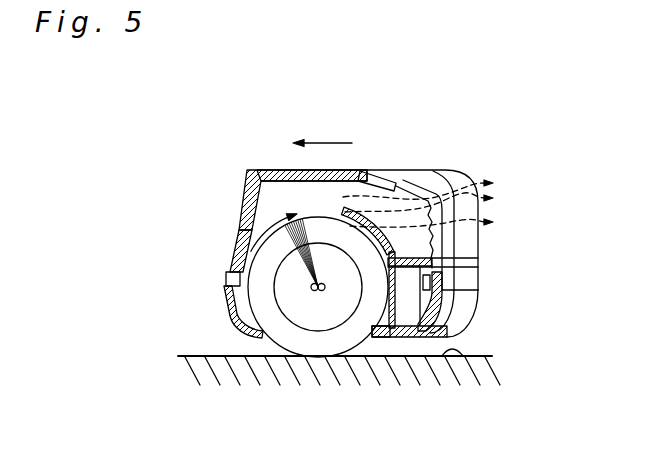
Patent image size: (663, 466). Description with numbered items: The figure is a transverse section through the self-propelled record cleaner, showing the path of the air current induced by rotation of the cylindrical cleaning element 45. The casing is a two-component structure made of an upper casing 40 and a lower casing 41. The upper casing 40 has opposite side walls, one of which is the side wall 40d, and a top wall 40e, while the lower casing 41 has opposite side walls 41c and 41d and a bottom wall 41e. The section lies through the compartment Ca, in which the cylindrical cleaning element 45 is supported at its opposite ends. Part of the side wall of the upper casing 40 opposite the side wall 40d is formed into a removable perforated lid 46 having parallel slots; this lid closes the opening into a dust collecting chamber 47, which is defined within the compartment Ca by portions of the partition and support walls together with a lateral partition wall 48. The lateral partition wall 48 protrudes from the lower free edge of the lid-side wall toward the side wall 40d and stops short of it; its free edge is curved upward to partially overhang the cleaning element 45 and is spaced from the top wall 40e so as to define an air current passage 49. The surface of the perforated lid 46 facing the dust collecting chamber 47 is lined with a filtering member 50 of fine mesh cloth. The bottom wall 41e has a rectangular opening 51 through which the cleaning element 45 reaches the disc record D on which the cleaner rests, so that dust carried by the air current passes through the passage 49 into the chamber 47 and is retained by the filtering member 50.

The upper casing 40 is at (232, 204).
The side wall 40d is at (229, 243).
The top wall 40e is at (291, 170).
The lower casing 41 is at (346, 355).
The side wall 41c is at (445, 320).
The side wall 41d is at (226, 310).
The bottom wall 41e is at (404, 338).
The cylindrical cleaning element 45 is at (320, 343).
The perforated lid 46 is at (440, 168).
The dust collecting chamber 47 is at (403, 176).
The lateral partition wall 48 is at (440, 246).
The air current passage 49 is at (353, 190).
The filtering member 50 is at (445, 237).
The rectangular opening 51 is at (371, 338).
The compartment Ca is at (267, 192).
The disc record D is at (467, 356).